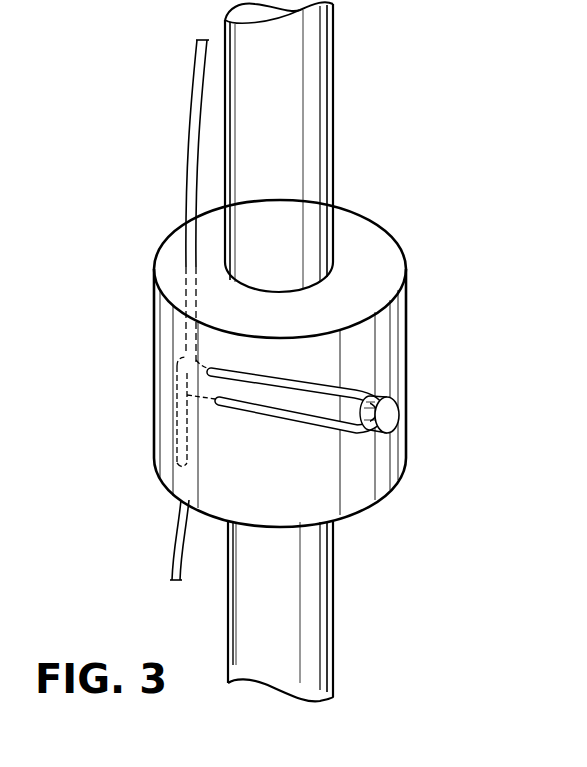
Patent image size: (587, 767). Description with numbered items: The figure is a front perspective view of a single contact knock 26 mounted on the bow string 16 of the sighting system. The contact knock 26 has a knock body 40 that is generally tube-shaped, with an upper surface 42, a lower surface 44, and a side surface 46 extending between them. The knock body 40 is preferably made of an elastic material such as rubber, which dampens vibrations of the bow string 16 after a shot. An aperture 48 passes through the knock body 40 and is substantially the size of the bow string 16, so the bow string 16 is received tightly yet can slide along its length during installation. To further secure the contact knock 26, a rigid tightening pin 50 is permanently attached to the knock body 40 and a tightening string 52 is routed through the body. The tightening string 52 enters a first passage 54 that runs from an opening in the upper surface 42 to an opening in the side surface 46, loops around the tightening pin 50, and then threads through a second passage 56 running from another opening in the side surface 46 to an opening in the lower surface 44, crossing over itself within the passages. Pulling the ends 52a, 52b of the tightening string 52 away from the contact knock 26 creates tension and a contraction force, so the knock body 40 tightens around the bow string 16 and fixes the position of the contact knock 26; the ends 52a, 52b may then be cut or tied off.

The bow string 16 is at (333, 93).
The contact knock 26 is at (303, 311).
The knock body 40 is at (318, 371).
The upper surface 42 is at (378, 276).
The lower surface 44 is at (355, 515).
The side surface 46 is at (288, 480).
The aperture 48 is at (258, 290).
The tightening pin 50 is at (397, 418).
The tightening string 52 is at (371, 386).
The end of tightening string 52a is at (195, 55).
The end of tightening string 52b is at (172, 575).
The first passage 54 is at (187, 335).
The second passage 56 is at (178, 432).